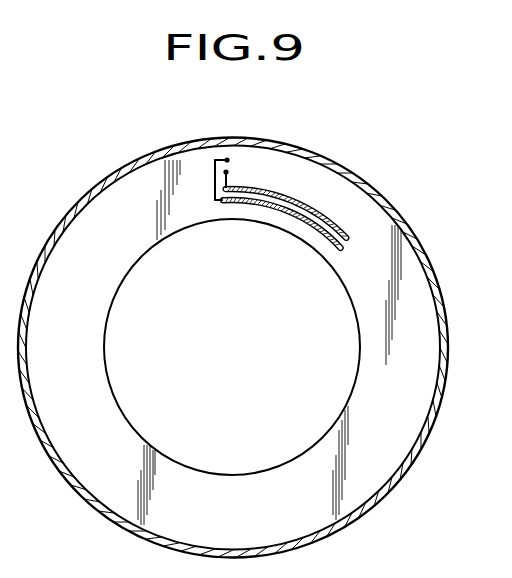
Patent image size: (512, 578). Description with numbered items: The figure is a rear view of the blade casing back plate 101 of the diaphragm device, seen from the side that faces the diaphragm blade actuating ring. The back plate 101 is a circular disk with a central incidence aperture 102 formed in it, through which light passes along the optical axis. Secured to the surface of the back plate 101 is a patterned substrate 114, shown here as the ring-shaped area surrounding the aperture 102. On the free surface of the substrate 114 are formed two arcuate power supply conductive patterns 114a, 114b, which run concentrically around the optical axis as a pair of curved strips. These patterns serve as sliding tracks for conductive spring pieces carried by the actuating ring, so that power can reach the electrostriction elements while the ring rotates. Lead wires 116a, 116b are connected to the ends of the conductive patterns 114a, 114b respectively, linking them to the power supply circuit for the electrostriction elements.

The blade casing back plate 101 is at (95, 193).
The incidence aperture 102 is at (258, 466).
The patterned substrate 114 is at (375, 232).
The arcuate power supply conductive pattern 114a is at (325, 213).
The arcuate power supply conductive pattern 114b is at (307, 222).
The lead wire 116a is at (228, 173).
The lead wire 116b is at (213, 185).